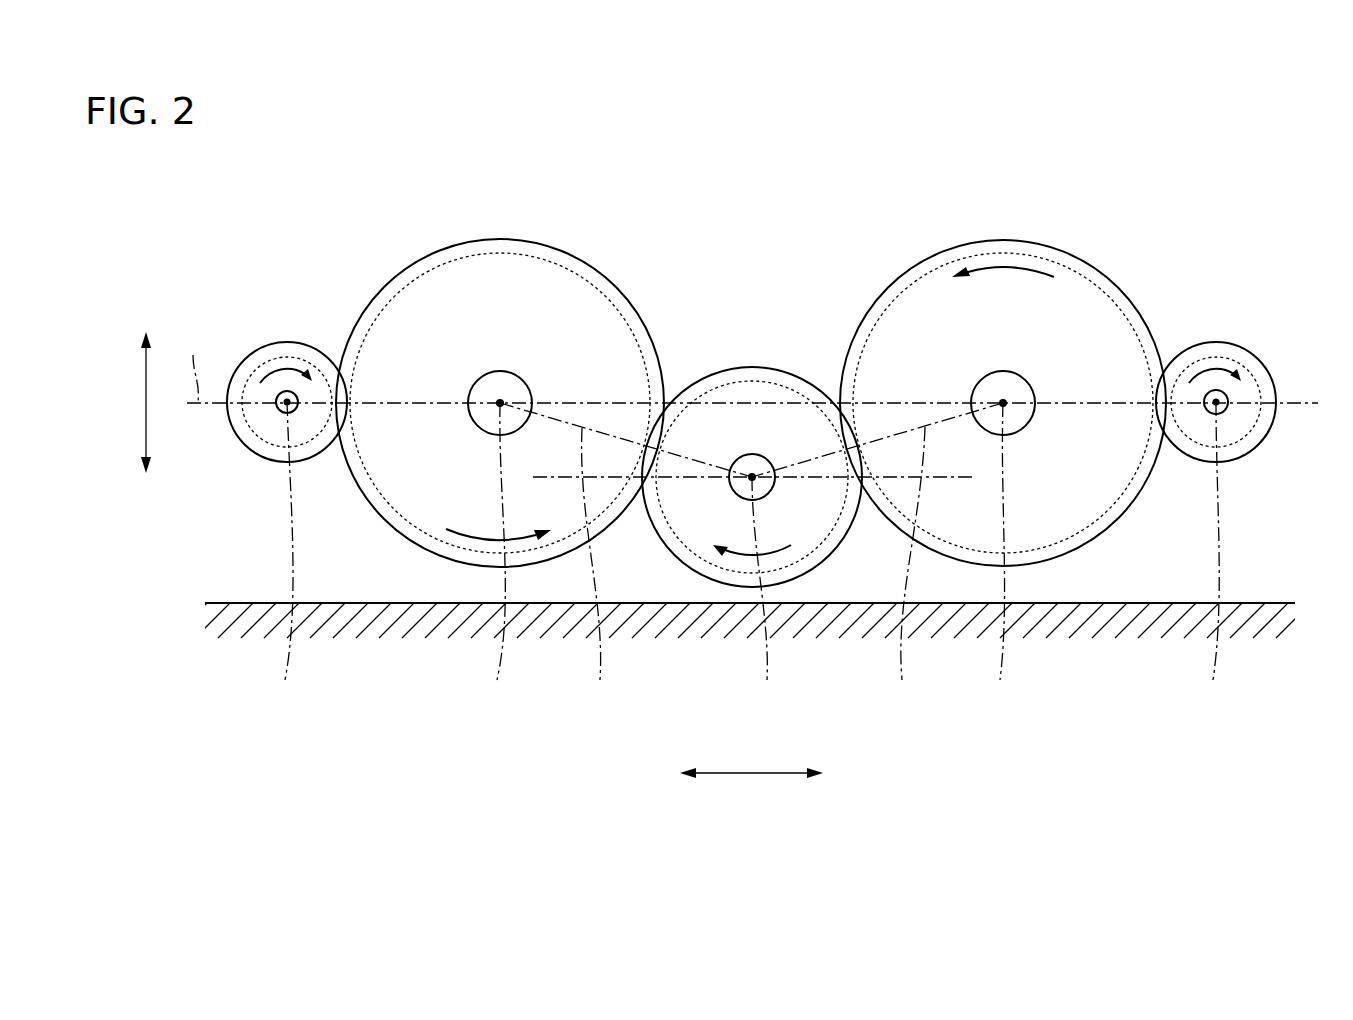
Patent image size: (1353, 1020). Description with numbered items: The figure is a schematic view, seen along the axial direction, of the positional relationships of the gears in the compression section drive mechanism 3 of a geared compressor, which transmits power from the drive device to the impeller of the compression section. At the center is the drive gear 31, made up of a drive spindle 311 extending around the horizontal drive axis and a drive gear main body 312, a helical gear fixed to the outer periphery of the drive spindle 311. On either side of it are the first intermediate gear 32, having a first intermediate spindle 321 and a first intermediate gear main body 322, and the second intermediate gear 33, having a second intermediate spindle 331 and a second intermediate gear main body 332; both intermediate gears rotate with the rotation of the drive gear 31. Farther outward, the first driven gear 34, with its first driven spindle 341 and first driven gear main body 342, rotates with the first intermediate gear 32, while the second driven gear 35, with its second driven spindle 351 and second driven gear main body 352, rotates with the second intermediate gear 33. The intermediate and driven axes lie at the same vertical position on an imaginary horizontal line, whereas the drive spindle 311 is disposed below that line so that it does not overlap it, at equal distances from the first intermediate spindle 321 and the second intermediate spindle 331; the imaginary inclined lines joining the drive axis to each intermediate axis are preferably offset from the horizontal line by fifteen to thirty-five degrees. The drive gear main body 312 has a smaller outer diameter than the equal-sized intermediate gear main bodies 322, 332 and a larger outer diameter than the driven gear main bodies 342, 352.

The compression section drive mechanism 3 is at (1212, 165).
The drive gear 31 is at (752, 352).
The drive spindle 311 is at (752, 454).
The drive gear main body 312 is at (723, 395).
The first intermediate gear 32 is at (928, 239).
The first intermediate spindle 321 is at (1005, 371).
The first intermediate gear main body 322 is at (1077, 288).
The second intermediate gear 33 is at (577, 240).
The second intermediate spindle 331 is at (493, 371).
The second intermediate gear main body 332 is at (450, 278).
The first driven gear 34 is at (1249, 334).
The first driven spindle 341 is at (1215, 391).
The first driven gear main body 342 is at (1191, 357).
The second driven gear 35 is at (319, 338).
The second driven spindle 351 is at (287, 391).
The second driven gear main body 352 is at (262, 357).